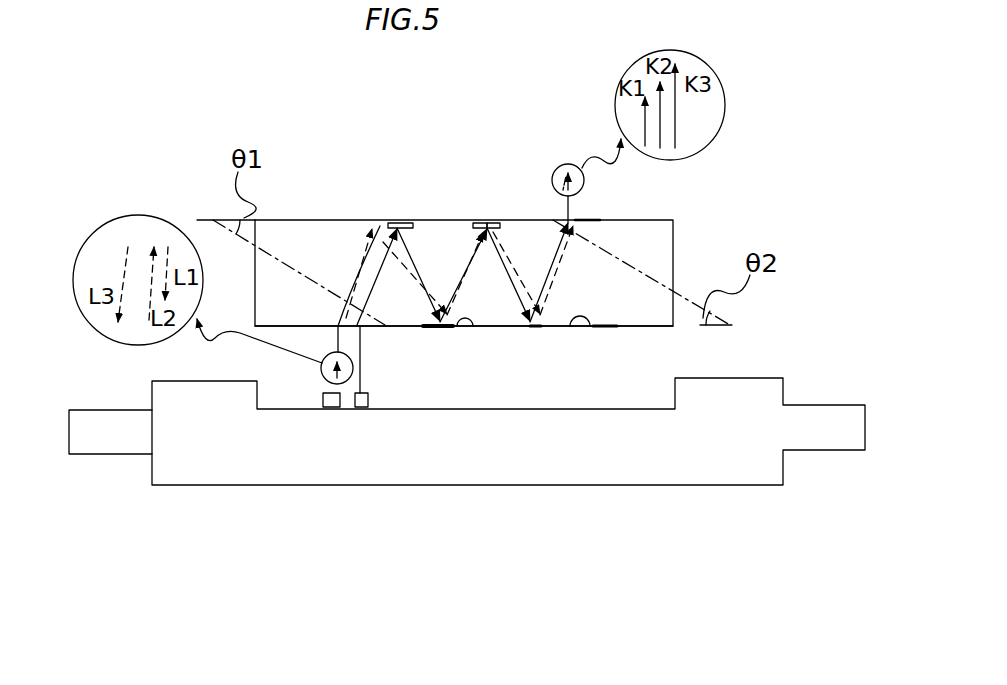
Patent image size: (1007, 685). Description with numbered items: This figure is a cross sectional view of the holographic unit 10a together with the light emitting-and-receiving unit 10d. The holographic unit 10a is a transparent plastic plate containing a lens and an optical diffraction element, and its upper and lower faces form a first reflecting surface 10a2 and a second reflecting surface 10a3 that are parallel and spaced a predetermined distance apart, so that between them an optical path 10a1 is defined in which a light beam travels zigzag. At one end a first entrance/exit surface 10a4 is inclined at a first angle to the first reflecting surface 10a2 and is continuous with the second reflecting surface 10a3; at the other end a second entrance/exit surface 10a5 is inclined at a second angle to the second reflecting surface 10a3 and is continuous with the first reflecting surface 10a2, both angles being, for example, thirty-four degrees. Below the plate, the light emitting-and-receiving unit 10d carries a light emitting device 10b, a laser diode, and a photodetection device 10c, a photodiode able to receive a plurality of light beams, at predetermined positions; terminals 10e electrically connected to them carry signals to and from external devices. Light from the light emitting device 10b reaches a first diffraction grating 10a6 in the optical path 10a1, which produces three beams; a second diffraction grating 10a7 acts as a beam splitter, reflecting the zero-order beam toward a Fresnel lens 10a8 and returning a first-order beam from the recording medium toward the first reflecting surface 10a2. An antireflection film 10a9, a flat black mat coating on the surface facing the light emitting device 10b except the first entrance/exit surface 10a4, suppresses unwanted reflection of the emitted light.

The holographic unit 10a is at (673, 232).
The optical path 10a1 is at (583, 277).
The first reflecting surface 10a2 is at (448, 218).
The second reflecting surface 10a3 is at (590, 328).
The first entrance/exit surface 10a4 is at (375, 328).
The second entrance/exit surface 10a5 is at (593, 218).
The first diffraction grating 10a6 is at (398, 218).
The second diffraction grating 10a7 is at (472, 328).
The Fresnel lens 10a8 is at (485, 218).
The antireflection film 10a9 is at (408, 329).
The light emitting device 10b is at (362, 408).
The photodetection device 10c is at (335, 408).
The light emitting-and-receiving unit 10d is at (652, 467).
The terminals 10e is at (73, 452).